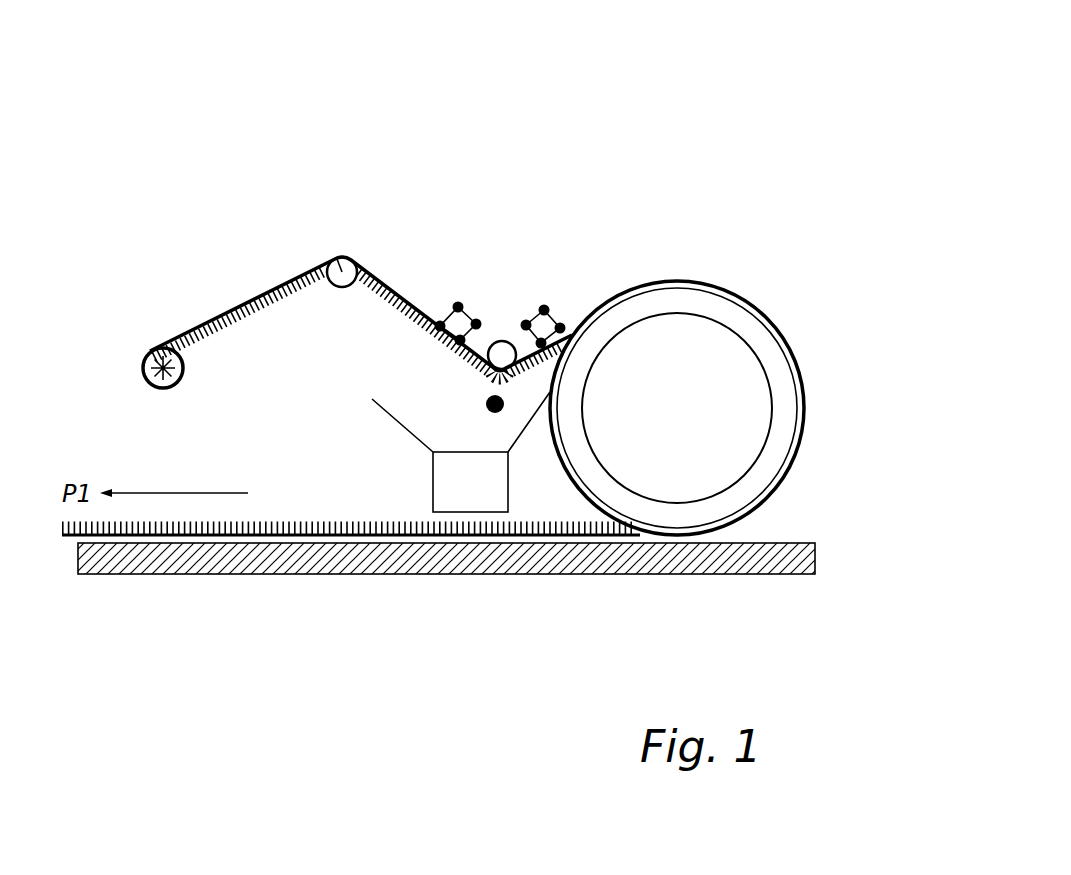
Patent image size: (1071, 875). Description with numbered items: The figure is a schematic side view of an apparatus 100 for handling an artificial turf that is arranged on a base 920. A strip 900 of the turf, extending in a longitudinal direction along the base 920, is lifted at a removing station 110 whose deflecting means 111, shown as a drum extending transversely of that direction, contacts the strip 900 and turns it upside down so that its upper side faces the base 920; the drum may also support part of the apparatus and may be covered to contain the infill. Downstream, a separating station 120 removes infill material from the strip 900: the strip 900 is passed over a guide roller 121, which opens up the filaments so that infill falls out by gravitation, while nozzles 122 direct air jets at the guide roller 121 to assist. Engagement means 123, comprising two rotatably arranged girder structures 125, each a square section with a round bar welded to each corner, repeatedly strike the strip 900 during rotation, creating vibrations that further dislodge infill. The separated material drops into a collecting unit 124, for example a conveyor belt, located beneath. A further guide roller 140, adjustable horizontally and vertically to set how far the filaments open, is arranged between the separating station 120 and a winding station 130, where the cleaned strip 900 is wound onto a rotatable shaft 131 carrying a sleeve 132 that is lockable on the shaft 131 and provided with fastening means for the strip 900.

The apparatus 100 is at (597, 76).
The removing station 110 is at (802, 269).
The deflecting means 111 is at (740, 424).
The separating station 120 is at (487, 258).
The guide roller 121 is at (502, 341).
The nozzles 122 is at (486, 404).
The engagement means 123 is at (559, 292).
The collecting unit 124 is at (458, 490).
The girder structure 125 is at (456, 306).
The winding station 130 is at (147, 329).
The shaft 131 is at (143, 358).
The sleeve 132 is at (147, 382).
The guide roller 140 is at (333, 257).
The strip 900 is at (612, 524).
The base 920 is at (258, 567).